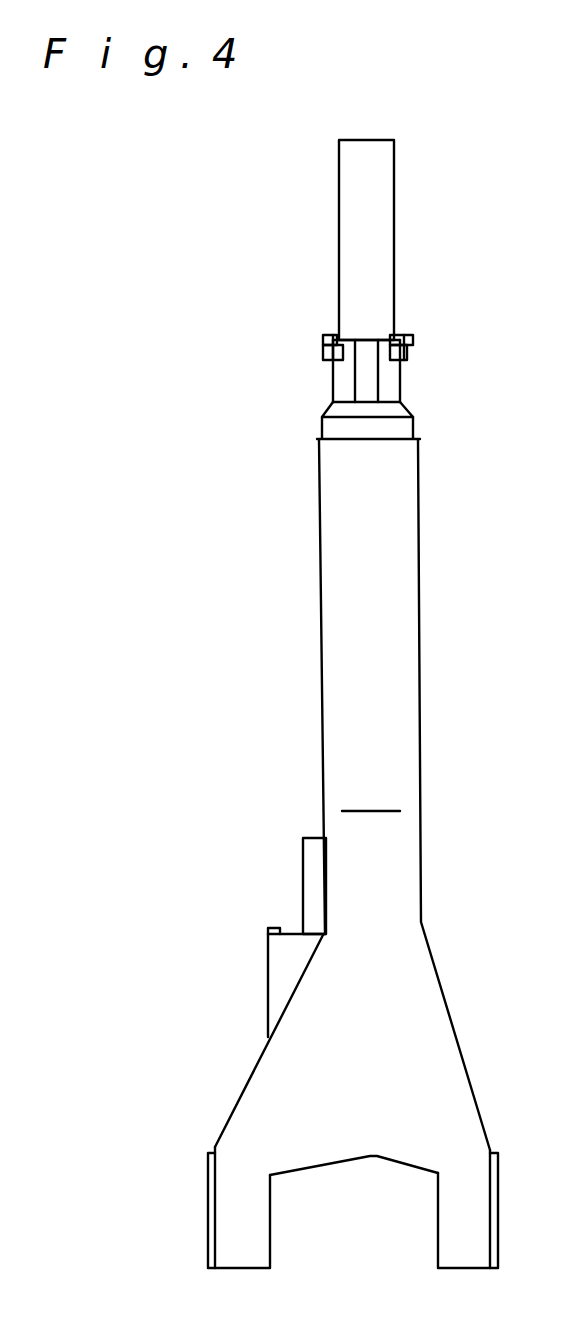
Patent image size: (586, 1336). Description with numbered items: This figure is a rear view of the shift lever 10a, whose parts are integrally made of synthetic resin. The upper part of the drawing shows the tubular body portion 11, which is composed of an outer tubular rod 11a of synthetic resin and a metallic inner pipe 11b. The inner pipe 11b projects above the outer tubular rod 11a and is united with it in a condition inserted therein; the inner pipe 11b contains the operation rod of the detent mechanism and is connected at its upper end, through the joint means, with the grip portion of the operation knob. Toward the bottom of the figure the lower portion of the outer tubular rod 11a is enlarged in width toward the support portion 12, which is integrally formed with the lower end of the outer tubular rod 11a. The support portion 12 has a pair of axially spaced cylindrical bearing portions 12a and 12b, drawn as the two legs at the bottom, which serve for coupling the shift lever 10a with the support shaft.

The shift lever 10a is at (305, 537).
The tubular body portion 11 is at (325, 687).
The outer tubular rod 11a is at (408, 693).
The metallic inner pipe 11b is at (382, 278).
The support portion 12 is at (210, 1148).
The cylindrical bearing portion 12a is at (258, 1242).
The cylindrical bearing portion 12b is at (458, 1223).